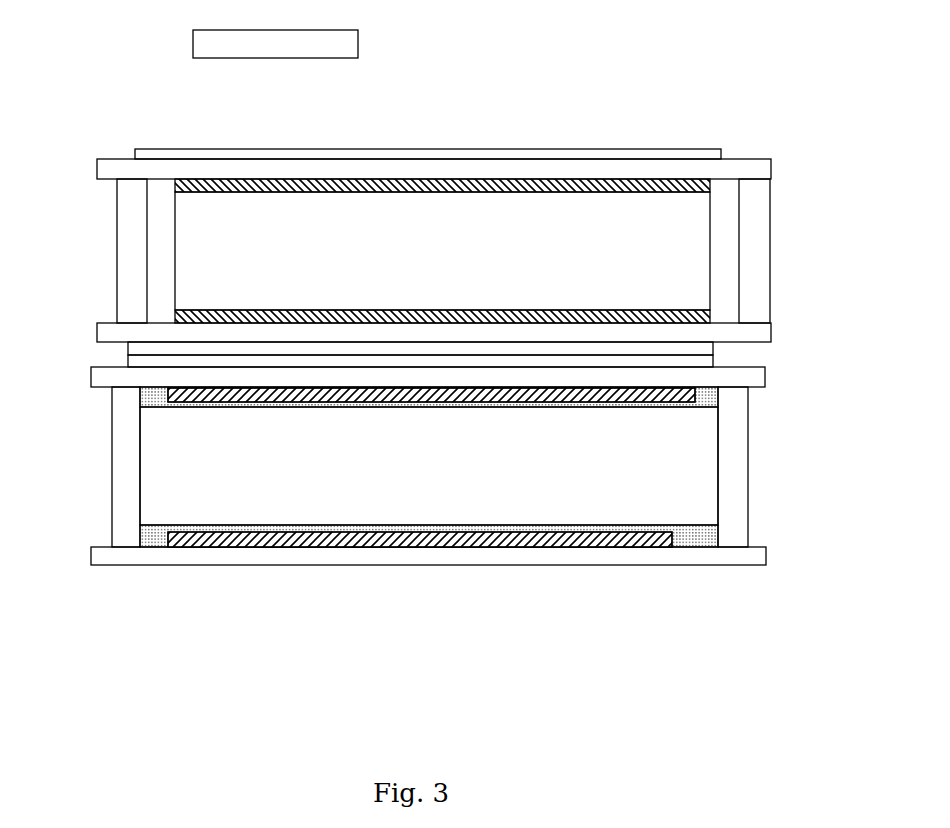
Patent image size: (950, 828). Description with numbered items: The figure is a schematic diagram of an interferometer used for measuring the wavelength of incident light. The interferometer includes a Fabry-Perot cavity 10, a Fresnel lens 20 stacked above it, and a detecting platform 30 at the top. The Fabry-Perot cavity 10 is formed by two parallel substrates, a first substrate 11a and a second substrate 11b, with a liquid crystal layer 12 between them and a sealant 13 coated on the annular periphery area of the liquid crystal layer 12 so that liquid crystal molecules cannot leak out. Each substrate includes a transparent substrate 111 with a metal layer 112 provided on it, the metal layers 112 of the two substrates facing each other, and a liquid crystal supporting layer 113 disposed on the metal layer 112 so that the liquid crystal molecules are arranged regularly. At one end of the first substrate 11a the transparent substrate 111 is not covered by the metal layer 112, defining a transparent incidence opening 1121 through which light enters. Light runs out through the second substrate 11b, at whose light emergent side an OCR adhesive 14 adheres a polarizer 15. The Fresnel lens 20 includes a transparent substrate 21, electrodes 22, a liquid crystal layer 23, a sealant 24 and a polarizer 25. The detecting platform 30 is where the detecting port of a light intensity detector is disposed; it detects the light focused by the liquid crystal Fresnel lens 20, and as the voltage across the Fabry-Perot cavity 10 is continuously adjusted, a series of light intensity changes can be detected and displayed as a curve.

The detecting platform 30 is at (208, 44).
The Fresnel lens 20 is at (78, 145).
The polarizer 25 is at (712, 155).
The transparent substrate 21 is at (740, 172).
The electrodes 22 is at (700, 183).
The liquid crystal layer 23 is at (677, 230).
The sealant 24 is at (130, 282).
The polarizer 15 is at (705, 345).
The OCR adhesive 14 is at (705, 362).
The Fabry-Perot cavity 10 is at (78, 343).
The transparent substrate 111 is at (735, 378).
The metal layer 112 is at (662, 394).
The transparent incidence opening 1121 is at (685, 548).
The liquid crystal supporting layer 113 is at (705, 403).
The first substrate 11a is at (443, 587).
The second substrate 11b is at (508, 400).
The liquid crystal layer 12 is at (685, 462).
The sealant 13 is at (127, 495).